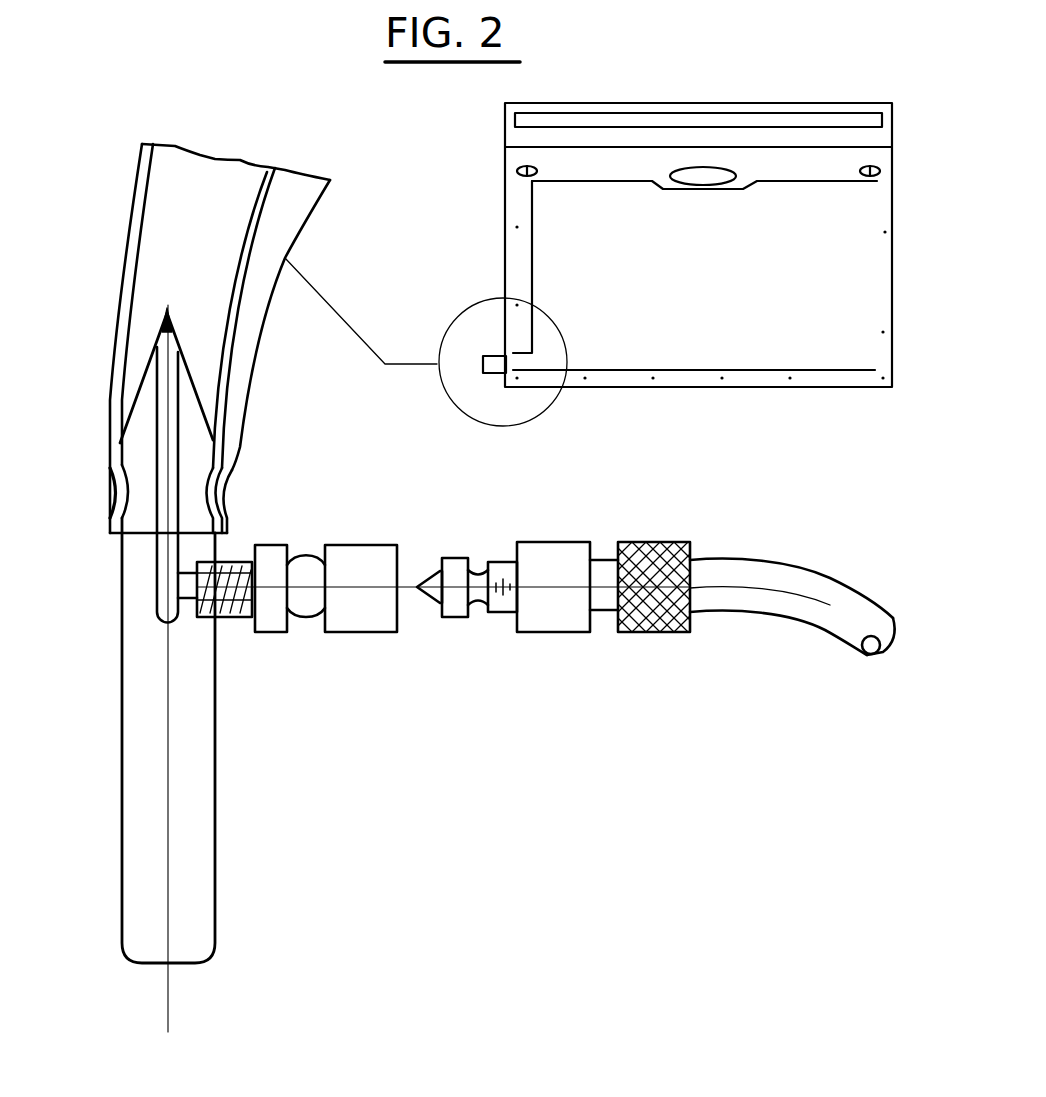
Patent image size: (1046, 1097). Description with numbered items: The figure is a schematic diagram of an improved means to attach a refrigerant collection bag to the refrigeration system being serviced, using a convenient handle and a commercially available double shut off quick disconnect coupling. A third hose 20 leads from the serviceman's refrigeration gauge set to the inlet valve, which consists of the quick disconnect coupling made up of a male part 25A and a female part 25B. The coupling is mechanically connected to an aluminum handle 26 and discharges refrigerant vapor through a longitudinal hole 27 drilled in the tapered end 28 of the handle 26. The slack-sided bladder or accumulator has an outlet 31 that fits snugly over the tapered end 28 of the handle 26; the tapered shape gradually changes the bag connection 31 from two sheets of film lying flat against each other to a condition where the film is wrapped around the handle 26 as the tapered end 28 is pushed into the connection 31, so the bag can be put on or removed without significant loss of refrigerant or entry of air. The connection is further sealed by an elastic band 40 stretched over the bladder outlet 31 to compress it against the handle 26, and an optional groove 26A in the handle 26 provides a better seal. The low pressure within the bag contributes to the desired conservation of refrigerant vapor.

The third hose 20 is at (750, 617).
The male part of double shut off quick disconnect coupling 25A is at (532, 632).
The female part of double shut off quick disconnect coupling 25B is at (327, 633).
The aluminum handle 26 is at (215, 750).
The groove 26A is at (130, 500).
The longitudinal hole 27 is at (160, 347).
The tapered end 28 is at (166, 310).
The bladder outlet 31 is at (298, 232).
The elastic band 40 is at (228, 483).